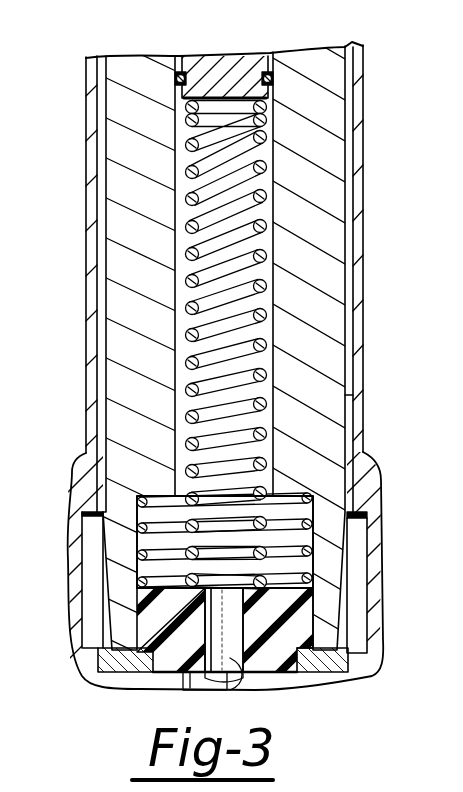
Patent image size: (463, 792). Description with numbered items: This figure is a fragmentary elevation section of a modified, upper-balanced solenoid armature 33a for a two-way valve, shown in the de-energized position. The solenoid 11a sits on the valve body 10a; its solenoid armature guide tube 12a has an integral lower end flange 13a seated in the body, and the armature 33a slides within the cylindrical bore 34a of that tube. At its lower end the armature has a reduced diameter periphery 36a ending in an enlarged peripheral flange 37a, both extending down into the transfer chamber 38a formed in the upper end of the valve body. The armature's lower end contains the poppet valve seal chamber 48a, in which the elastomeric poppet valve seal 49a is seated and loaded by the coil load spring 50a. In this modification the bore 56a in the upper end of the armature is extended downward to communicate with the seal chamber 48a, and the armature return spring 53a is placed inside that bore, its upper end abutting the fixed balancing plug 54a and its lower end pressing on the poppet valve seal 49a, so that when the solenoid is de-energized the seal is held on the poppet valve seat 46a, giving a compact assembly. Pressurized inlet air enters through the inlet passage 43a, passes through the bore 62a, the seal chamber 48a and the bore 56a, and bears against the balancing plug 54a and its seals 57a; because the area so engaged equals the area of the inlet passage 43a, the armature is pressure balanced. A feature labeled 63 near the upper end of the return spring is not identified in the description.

The valve body 10a is at (62, 623).
The solenoid 11a is at (80, 215).
The solenoid armature guide tube 12a is at (356, 294).
The lower end flange 13a is at (364, 474).
The solenoid armature 33a is at (330, 196).
The cylindrical bore 34a is at (349, 399).
The reduced diameter periphery 36a is at (315, 586).
The peripheral flange 37a is at (340, 657).
The transfer chamber 38a is at (367, 604).
The inlet passage 43a is at (185, 688).
The poppet valve seat 46a is at (196, 690).
The poppet valve seal chamber 48a is at (313, 533).
The poppet valve seal 49a is at (296, 634).
The load spring 50a is at (313, 505).
The armature return spring 53a is at (268, 370).
The balancing plug 54a is at (252, 70).
The bore 56a is at (186, 72).
The seals 57a is at (273, 78).
The bore 62a is at (230, 690).
The spring end coil 63 is at (267, 120).